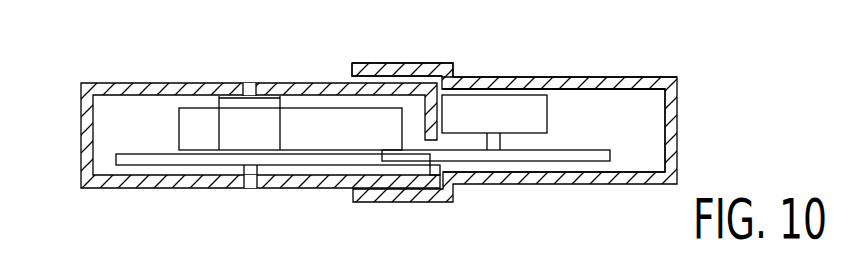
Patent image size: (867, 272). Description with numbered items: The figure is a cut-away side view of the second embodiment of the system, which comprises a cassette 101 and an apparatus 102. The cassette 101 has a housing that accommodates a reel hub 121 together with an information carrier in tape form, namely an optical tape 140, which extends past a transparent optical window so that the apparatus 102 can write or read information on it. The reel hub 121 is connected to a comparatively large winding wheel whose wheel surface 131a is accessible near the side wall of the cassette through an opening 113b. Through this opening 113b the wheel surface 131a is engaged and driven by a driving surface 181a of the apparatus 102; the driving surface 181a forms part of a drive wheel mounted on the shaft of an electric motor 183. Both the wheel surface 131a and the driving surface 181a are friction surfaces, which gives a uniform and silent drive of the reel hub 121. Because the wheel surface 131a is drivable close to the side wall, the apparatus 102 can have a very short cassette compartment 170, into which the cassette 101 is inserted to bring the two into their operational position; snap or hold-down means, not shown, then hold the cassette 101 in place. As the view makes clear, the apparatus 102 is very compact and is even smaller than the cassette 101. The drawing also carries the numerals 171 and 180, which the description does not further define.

The cassette 101 is at (80, 64).
The apparatus 102 is at (676, 63).
The overlapping flange of second housing 171 is at (352, 77).
The cassette compartment 170 is at (442, 78).
The reel hub 121 is at (266, 105).
The optical tape 140 is at (380, 122).
The wheel surface 131a is at (320, 160).
The opening 113b is at (430, 166).
The driving surface 181a is at (588, 156).
The electric motor 183 is at (535, 112).
The second housing interior assembly 180 is at (640, 138).